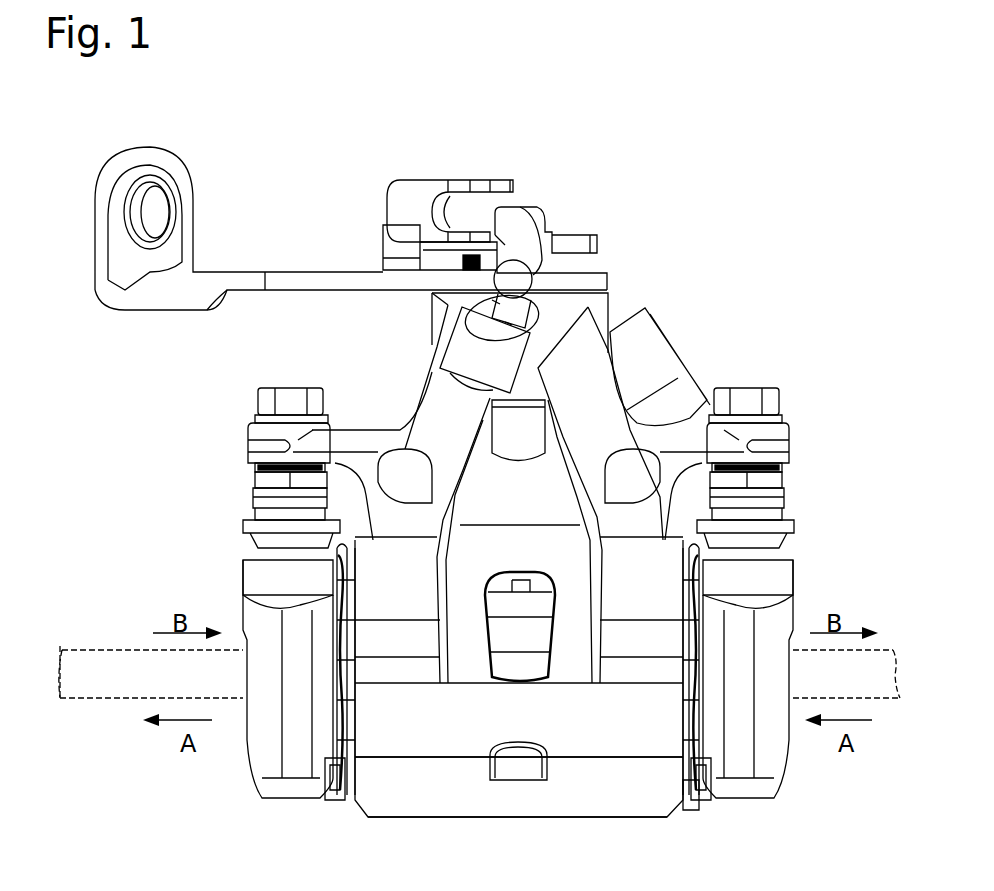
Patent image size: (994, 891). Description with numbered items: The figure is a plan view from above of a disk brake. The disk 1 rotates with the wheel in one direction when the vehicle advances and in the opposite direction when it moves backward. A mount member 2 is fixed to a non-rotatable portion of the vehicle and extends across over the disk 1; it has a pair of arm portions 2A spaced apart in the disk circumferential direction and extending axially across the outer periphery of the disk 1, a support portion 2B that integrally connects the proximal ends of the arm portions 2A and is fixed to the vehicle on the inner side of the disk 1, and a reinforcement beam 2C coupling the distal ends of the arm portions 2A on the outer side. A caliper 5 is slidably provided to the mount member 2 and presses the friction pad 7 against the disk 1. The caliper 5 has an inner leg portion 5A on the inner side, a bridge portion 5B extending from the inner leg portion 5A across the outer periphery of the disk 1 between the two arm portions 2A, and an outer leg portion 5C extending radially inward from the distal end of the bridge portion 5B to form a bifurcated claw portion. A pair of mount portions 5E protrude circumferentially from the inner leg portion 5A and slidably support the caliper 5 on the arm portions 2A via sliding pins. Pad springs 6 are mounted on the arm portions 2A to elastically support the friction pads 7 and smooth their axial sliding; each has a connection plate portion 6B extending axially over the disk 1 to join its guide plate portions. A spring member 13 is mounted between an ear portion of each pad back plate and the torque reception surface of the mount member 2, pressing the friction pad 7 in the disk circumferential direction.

The disk 1 is at (83, 700).
The mount member 2 is at (278, 810).
The arm portions 2A is at (265, 750).
The support portion 2B is at (730, 492).
The reinforcement beam 2C is at (680, 812).
The caliper 5 is at (398, 404).
The inner leg portion 5A is at (640, 530).
The bridge portion 5B is at (410, 675).
The outer leg portion 5C is at (616, 800).
The mount portions 5E is at (248, 446).
The pad springs 6 is at (335, 630).
The connection plate portion 6B is at (335, 720).
The friction pad 7 is at (522, 612).
The spring member 13 is at (705, 540).